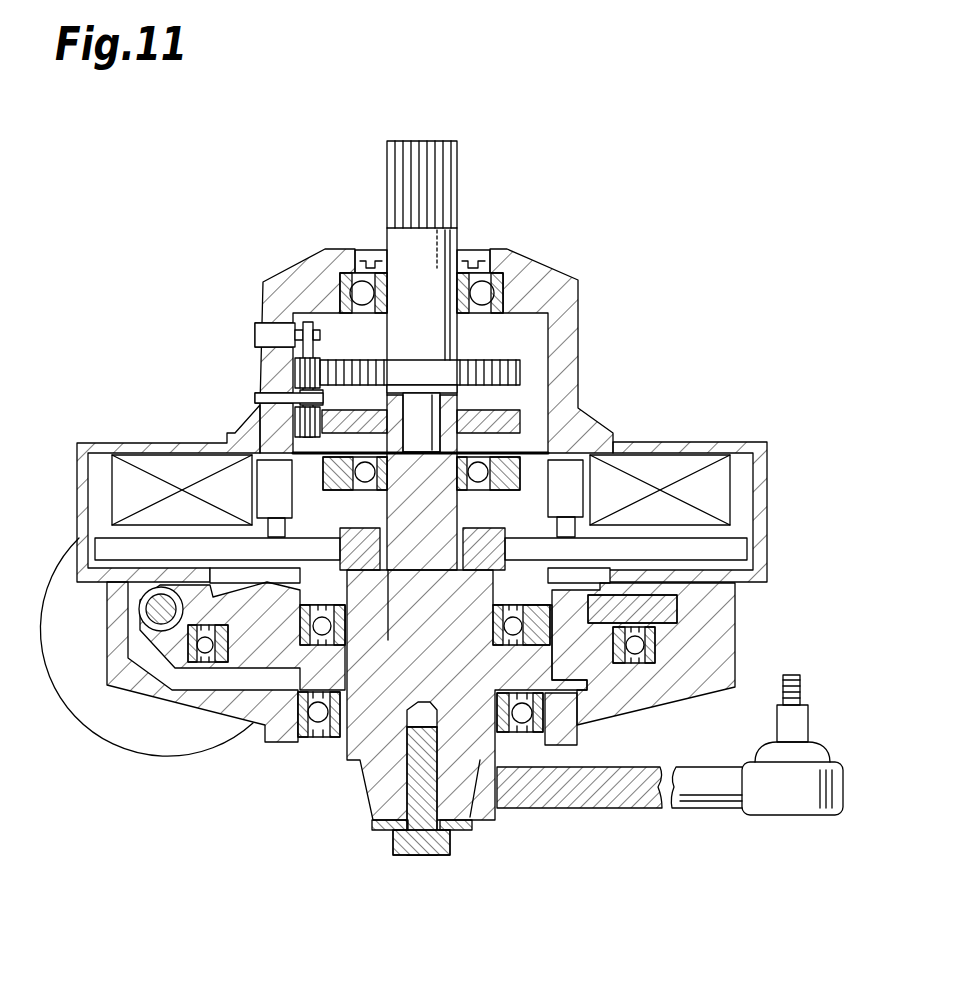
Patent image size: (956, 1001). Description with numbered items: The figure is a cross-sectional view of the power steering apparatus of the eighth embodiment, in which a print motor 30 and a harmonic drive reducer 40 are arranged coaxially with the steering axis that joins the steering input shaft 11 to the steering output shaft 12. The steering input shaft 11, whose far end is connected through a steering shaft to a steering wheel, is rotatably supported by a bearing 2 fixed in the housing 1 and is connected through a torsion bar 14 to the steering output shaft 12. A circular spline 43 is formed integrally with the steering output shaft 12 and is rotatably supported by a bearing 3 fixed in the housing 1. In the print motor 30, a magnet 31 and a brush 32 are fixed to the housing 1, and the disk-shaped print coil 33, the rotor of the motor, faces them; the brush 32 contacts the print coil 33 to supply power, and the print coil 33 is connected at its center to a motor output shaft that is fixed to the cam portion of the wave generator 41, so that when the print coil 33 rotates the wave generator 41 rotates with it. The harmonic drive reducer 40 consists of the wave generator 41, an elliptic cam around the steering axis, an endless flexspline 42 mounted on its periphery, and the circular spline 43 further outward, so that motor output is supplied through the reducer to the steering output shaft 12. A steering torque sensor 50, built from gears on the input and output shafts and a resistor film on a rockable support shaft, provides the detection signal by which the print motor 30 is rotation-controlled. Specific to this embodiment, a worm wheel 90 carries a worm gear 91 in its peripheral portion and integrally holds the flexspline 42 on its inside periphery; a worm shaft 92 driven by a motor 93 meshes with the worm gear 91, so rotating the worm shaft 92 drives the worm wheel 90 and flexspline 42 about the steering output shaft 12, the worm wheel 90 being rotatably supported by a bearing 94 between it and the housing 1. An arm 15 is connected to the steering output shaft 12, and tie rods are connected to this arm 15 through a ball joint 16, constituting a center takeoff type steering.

The housing 1 is at (560, 267).
The bearing 2 is at (500, 256).
The bearing 3 is at (312, 740).
The steering input shaft 11 is at (390, 163).
The steering output shaft 12 is at (378, 802).
The torsion bar 14 is at (438, 403).
The arm 15 is at (587, 808).
The ball joint 16 is at (787, 805).
The print motor 30 is at (452, 481).
The magnet 31 is at (705, 462).
The brush 32 is at (572, 470).
The print coil 33 is at (753, 550).
The harmonic drive reducer 40 is at (615, 750).
The wave generator 41 is at (535, 648).
The flexspline 42 is at (565, 650).
The circular spline 43 is at (600, 668).
The steering torque sensor 50 is at (340, 351).
The worm wheel 90 is at (183, 665).
The worm gear 91 is at (677, 609).
The worm shaft 92 is at (139, 610).
The motor 93 is at (98, 710).
The bearing 94 is at (205, 665).